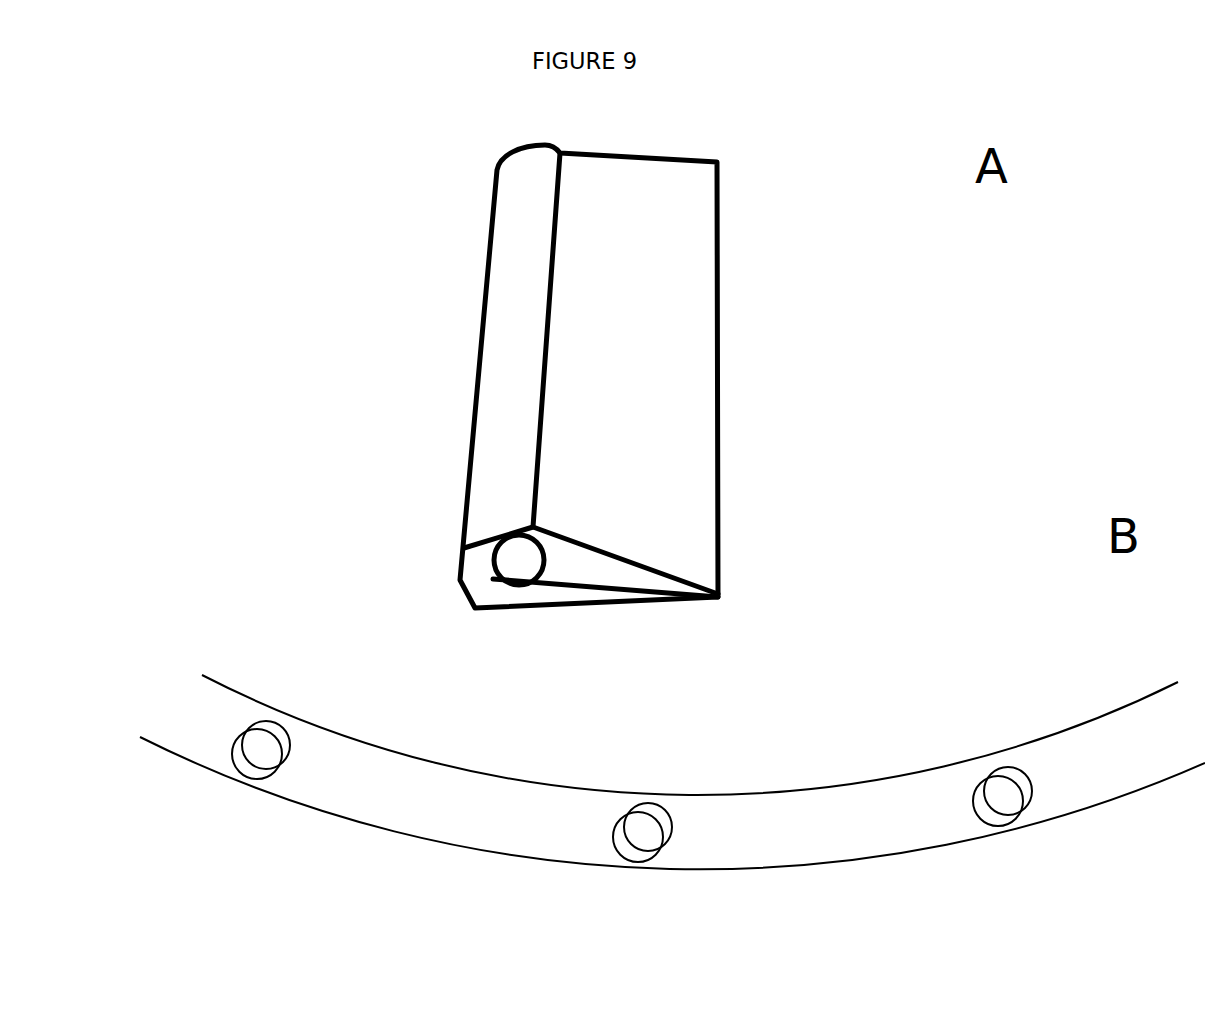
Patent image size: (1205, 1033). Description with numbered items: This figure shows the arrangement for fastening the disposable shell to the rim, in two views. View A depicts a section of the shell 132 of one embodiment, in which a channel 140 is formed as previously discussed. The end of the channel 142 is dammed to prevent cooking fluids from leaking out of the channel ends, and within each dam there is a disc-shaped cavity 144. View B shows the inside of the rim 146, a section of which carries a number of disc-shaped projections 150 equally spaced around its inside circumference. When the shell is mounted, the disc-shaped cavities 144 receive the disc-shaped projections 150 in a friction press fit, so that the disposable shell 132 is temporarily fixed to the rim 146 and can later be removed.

The shell 132 is at (647, 345).
The channel 140 is at (553, 480).
The end of the channel 142 is at (640, 568).
The disc-shaped cavity 144 is at (522, 565).
The ring 146 is at (400, 770).
The disc-shaped projections 150 is at (652, 832).